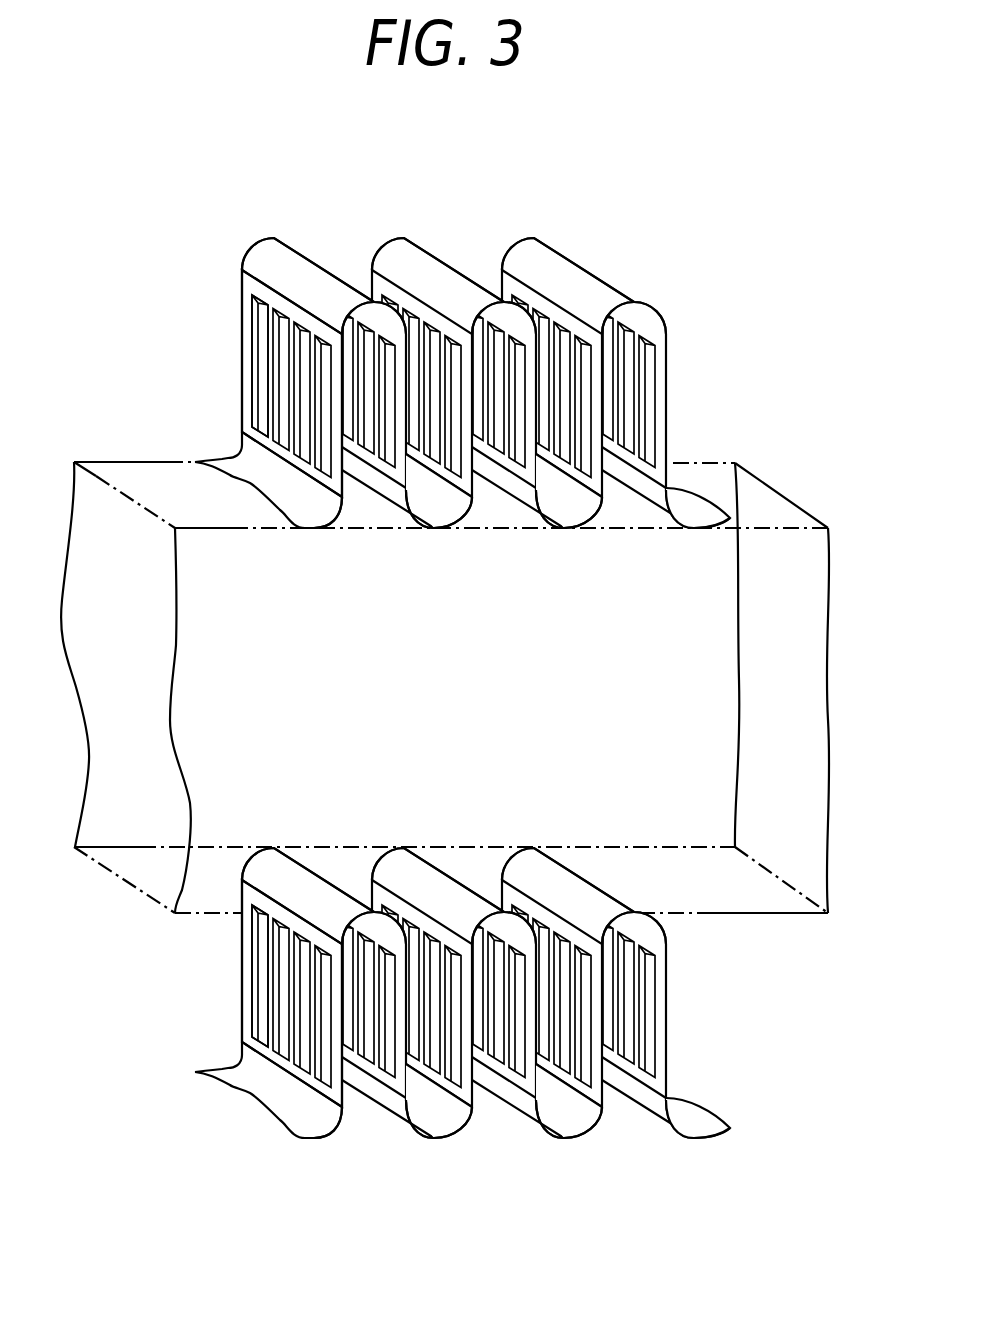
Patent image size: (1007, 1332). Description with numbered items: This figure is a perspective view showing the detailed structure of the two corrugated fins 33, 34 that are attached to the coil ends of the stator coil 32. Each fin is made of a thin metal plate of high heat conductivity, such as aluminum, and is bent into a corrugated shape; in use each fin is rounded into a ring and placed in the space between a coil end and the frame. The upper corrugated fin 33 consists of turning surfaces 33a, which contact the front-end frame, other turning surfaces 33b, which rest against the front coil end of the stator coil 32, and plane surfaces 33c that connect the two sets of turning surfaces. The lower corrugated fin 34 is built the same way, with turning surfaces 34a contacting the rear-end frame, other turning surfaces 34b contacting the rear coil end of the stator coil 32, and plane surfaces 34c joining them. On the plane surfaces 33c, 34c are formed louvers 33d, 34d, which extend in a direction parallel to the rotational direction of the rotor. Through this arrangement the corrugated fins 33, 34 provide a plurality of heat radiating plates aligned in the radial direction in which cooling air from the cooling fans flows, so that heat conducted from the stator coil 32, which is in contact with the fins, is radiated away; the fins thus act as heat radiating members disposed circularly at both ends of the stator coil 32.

The stator coil 32 is at (757, 499).
The corrugated fin 33 is at (626, 250).
The turning surfaces 33a is at (532, 247).
The turning surfaces 33b is at (577, 562).
The plane surfaces 33c is at (246, 283).
The louvers 33d is at (259, 405).
The corrugated fin 34 is at (700, 1027).
The turning surfaces 34a is at (580, 1128).
The turning surfaces 34b is at (532, 857).
The plane surfaces 34c is at (246, 972).
The louvers 34d is at (256, 1017).